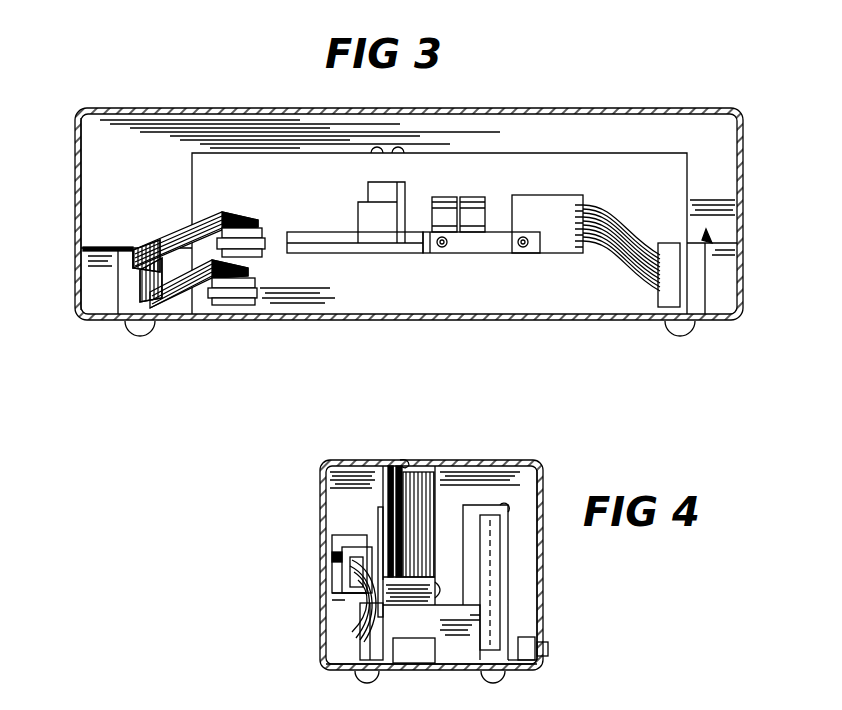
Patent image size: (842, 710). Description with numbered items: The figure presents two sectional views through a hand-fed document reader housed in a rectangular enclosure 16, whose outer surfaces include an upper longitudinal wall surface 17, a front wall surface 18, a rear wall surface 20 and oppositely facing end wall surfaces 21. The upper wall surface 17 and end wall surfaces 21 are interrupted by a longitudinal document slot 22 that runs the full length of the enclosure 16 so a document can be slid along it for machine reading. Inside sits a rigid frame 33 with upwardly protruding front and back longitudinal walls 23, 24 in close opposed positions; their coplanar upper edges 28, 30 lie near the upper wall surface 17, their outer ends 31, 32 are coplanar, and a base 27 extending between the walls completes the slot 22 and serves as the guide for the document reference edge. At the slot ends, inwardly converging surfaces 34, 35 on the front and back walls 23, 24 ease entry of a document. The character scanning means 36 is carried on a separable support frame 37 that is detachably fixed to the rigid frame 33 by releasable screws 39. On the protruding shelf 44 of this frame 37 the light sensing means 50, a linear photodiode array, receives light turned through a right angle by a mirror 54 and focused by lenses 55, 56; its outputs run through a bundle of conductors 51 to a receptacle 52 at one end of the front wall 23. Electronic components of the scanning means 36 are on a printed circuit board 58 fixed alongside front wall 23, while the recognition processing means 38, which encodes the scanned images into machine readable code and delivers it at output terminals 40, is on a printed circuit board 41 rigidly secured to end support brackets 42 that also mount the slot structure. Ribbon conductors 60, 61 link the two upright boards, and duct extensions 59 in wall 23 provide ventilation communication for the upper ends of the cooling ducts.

In FIG. 3, the enclosure 16 is at (512, 108).
In FIG. 4, the enclosure 16 is at (543, 485).
In FIG. 3, the upper longitudinal wall surface 17 is at (233, 112).
In FIG. 4, the upper longitudinal wall surface 17 is at (478, 462).
In FIG. 4, the front wall surface 18 is at (332, 554).
In FIG. 4, the rear wall surface 20 is at (539, 548).
In FIG. 3, the end wall surface 21 is at (78, 200).
In FIG. 4, the end wall surface 21 is at (522, 462).
In FIG. 4, the document slot 22 is at (408, 462).
In FIG. 4, the front longitudinal wall 23 is at (390, 483).
In FIG. 4, the back longitudinal wall 24 is at (414, 495).
In FIG. 4, the base 27 is at (410, 600).
In FIG. 4, the longitudinal upper edge 28 is at (396, 463).
In FIG. 4, the longitudinal upper edge 30 is at (438, 466).
In FIG. 4, the outer end 31 is at (376, 513).
In FIG. 4, the outer end 32 is at (425, 538).
In FIG. 3, the rigid frame 33 is at (737, 245).
In FIG. 4, the rigid frame 33 is at (448, 667).
In FIG. 4, the inwardly converging surface 34 is at (325, 501).
In FIG. 4, the inwardly converging surface 35 is at (441, 486).
In FIG. 3, the character scanning means 36 is at (450, 196).
In FIG. 4, the character scanning means 36 is at (340, 581).
In FIG. 3, the separable support frame 37 is at (408, 255).
In FIG. 4, the separable support frame 37 is at (336, 600).
In FIG. 4, the recognition processing means 38 is at (512, 590).
In FIG. 4, the releasable screw 39 is at (438, 588).
In FIG. 4, the output terminal 40 is at (549, 648).
In FIG. 4, the printed circuit board 41 is at (505, 531).
In FIG. 3, the end support bracket 42 is at (725, 291).
In FIG. 4, the end support bracket 42 is at (474, 573).
In FIG. 3, the shelf 44 is at (342, 256).
In FIG. 4, the shelf 44 is at (340, 609).
In FIG. 3, the light sensing means 50 is at (556, 195).
In FIG. 4, the light sensing means 50 is at (345, 566).
In FIG. 3, the bundle of conductors 51 is at (612, 222).
In FIG. 3, the receptacle 52 is at (657, 294).
In FIG. 3, the mirror 54 is at (390, 184).
In FIG. 4, the mirror 54 is at (340, 537).
In FIG. 3, the focusing lens 55 is at (450, 254).
In FIG. 3, the focusing lens 56 is at (477, 254).
In FIG. 3, the printed circuit board 58 is at (652, 153).
In FIG. 4, the printed circuit board 58 is at (383, 648).
In FIG. 3, the duct extension 59 is at (387, 138).
In FIG. 3, the ribbon conductor 60 is at (186, 238).
In FIG. 3, the ribbon conductor 61 is at (175, 290).